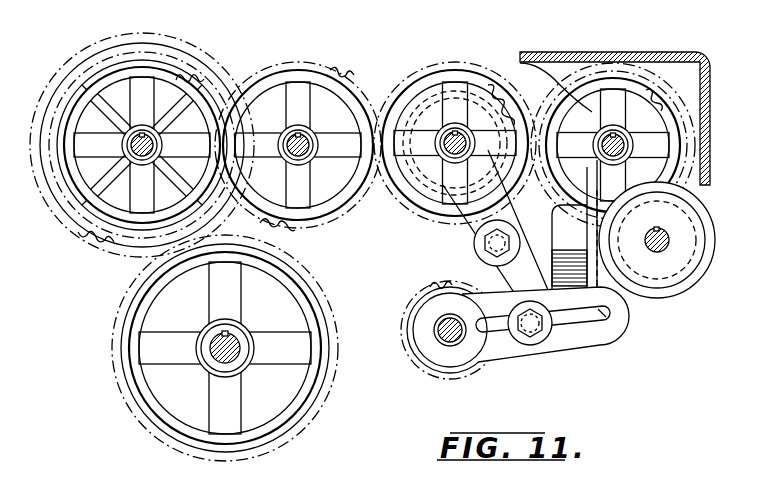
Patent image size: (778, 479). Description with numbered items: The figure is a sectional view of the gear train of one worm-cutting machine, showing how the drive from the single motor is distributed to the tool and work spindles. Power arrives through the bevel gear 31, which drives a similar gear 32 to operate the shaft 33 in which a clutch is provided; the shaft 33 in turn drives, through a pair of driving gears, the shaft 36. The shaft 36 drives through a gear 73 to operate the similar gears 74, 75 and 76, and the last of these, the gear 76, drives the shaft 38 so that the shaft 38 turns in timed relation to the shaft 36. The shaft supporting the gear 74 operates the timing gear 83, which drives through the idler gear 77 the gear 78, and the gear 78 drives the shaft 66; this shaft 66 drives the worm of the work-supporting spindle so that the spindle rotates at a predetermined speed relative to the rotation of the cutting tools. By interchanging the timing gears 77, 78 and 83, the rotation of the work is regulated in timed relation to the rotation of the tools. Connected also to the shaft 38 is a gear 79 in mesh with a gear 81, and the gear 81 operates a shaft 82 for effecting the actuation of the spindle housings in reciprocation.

The bevel gear 31 is at (593, 242).
The gear 32 is at (669, 250).
The shaft 33 is at (670, 238).
The shaft 36 is at (618, 132).
The shaft 38 is at (135, 145).
The shaft 66 is at (437, 333).
The gear 73 is at (617, 73).
The gear 74 is at (459, 121).
The gear 75 is at (335, 78).
The gear 76 is at (142, 145).
The idler gear 77 is at (455, 245).
The gear 78 is at (494, 344).
The gear 79 is at (82, 232).
The gear 81 is at (202, 340).
The shaft 82 is at (238, 367).
The timing gear 83 is at (490, 85).